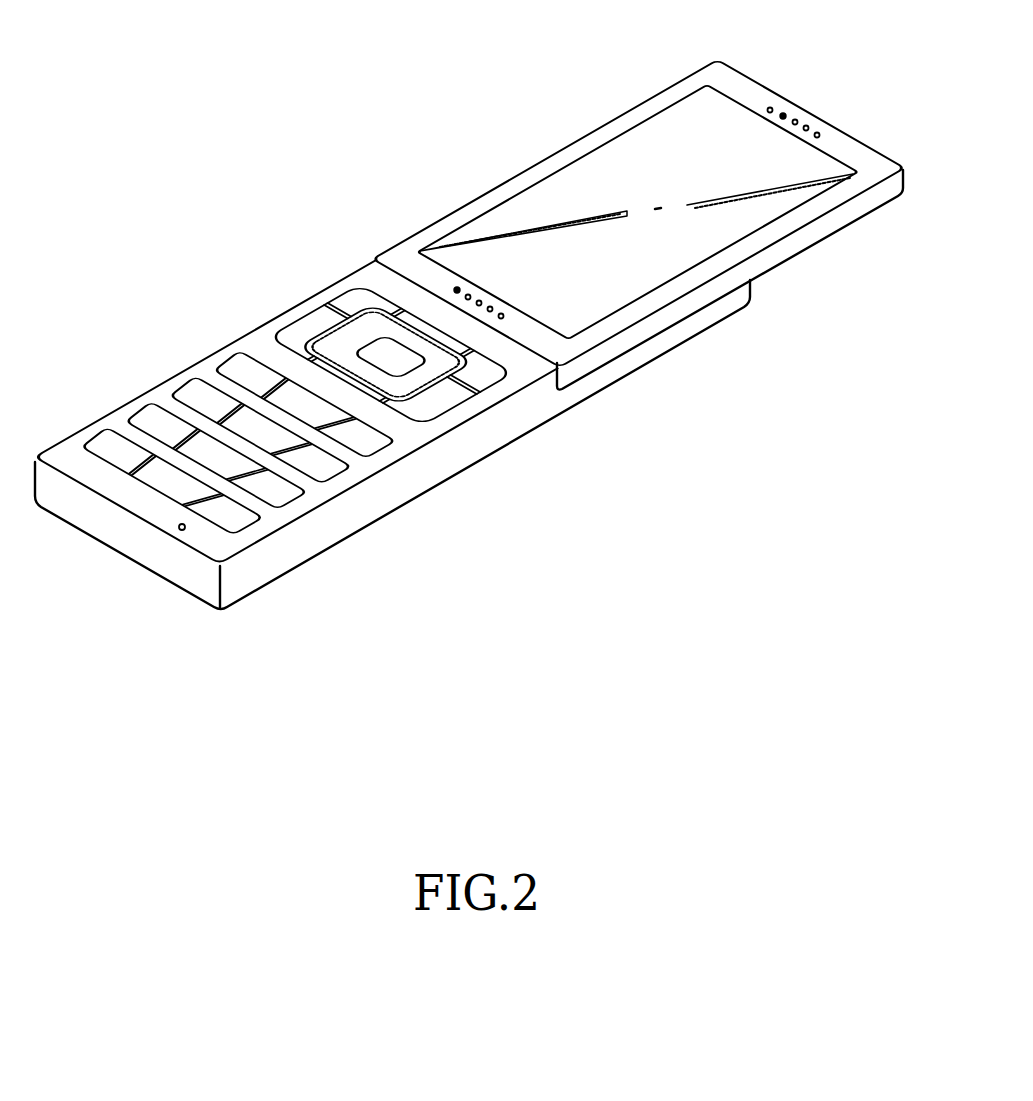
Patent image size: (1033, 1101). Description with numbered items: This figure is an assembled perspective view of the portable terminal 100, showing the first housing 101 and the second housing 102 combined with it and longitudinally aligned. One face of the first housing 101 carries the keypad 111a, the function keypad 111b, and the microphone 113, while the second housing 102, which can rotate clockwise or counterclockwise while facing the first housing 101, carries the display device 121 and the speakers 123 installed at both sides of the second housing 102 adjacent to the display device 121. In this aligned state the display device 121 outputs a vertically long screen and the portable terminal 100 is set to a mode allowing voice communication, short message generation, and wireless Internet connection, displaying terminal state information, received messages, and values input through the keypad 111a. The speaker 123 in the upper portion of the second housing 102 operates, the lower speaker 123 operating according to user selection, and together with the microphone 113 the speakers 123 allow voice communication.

The portable terminal 100 is at (196, 184).
The first housing 101 is at (392, 432).
The second housing 102 is at (597, 205).
The keypad 111a is at (221, 431).
The function keypad 111b is at (379, 336).
The microphone 113 is at (178, 527).
The display device 121 is at (640, 147).
The speakers 123 is at (784, 116).